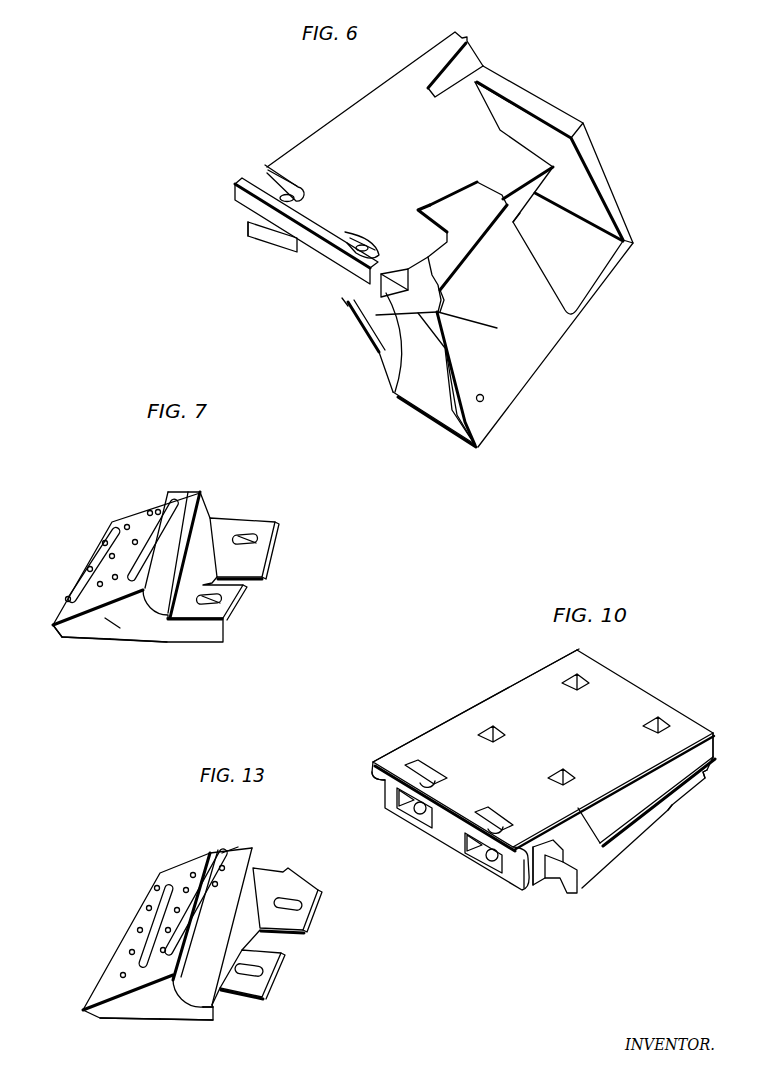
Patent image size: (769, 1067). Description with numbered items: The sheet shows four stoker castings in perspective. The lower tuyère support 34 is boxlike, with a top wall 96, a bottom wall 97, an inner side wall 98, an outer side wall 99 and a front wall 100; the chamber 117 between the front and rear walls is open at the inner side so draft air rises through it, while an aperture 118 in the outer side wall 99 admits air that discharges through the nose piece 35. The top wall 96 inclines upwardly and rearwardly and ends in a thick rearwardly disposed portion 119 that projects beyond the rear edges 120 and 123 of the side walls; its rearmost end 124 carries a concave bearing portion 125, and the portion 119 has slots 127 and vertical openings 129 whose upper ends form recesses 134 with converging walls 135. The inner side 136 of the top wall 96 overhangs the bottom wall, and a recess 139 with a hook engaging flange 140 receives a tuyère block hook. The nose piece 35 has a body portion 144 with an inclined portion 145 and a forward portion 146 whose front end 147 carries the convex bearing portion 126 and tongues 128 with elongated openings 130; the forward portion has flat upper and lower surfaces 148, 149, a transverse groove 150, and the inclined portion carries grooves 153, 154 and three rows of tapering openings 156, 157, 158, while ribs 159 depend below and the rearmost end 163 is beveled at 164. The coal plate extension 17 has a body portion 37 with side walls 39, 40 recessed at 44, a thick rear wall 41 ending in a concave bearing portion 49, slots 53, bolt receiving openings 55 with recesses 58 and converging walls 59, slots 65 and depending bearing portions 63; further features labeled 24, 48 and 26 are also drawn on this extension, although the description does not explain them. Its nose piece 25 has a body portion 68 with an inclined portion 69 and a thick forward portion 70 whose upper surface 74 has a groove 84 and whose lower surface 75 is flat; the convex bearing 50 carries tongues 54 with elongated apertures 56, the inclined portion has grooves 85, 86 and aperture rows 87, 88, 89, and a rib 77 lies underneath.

In FIG. 6, the top wall 96 is at (343, 130).
In FIG. 6, the lower tuyère support 34 is at (424, 87).
In FIG. 6, the front wall 100 is at (536, 112).
In FIG. 6, the bottom wall 97 is at (600, 274).
In FIG. 6, the chamber 117 is at (634, 246).
In FIG. 6, the inner side 136 is at (529, 190).
In FIG. 6, the recess 139 is at (487, 218).
In FIG. 6, the hook engaging flange 140 is at (440, 230).
In FIG. 6, the slots 127 is at (250, 220).
In FIG. 6, the recesses 134 is at (270, 183).
In FIG. 6, the walls 135 is at (272, 167).
In FIG. 6, the vertical openings 129 is at (293, 197).
In FIG. 6, the rearwardly disposed portion 119 is at (250, 234).
In FIG. 6, the rearmost end 124 is at (274, 250).
In FIG. 6, the concave bearing portion 125 is at (385, 294).
In FIG. 6, the outer side wall 99 is at (352, 320).
In FIG. 6, the rearwardly disposed edge 123 is at (370, 348).
In FIG. 6, the rearwardly disposed edge 120 is at (402, 404).
In FIG. 6, the inner side wall 98 is at (501, 361).
In FIG. 6, the aperture 118 is at (484, 398).
In FIG. 7, the lower surface 149 is at (116, 518).
In FIG. 7, the upper surface 148 is at (182, 499).
In FIG. 7, the nose piece 35 is at (211, 504).
In FIG. 7, the rearmost end 163 is at (50, 626).
In FIG. 7, the body portion 144 is at (160, 643).
In FIG. 7, the convex bearing portion 126 is at (224, 519).
In FIG. 7, the front end 147 is at (262, 521).
In FIG. 7, the tongues 128 is at (278, 547).
In FIG. 7, the elongated openings 130 is at (252, 546).
In FIG. 7, the openings 158 is at (106, 532).
In FIG. 7, the transverse groove 150 is at (186, 500).
In FIG. 7, the transverse groove 154 is at (88, 577).
In FIG. 7, the openings 157 is at (126, 523).
In FIG. 7, the openings 156 is at (158, 509).
In FIG. 7, the transverse groove 153 is at (149, 510).
In FIG. 7, the bevel 164 is at (62, 640).
In FIG. 7, the inclined portion 145 is at (83, 620).
In FIG. 7, the strengthening rib 159 is at (113, 625).
In FIG. 7, the forward portion 146 is at (158, 642).
In FIG. 10, the top plate 24 is at (543, 750).
In FIG. 10, the coal plate extension 17 is at (577, 652).
In FIG. 10, the side wall 39 is at (517, 687).
In FIG. 10, the body portion 37 is at (714, 737).
In FIG. 10, the dimple 48 is at (588, 684).
In FIG. 10, the rear wall 41 is at (447, 835).
In FIG. 10, the concave bearing portion 49 is at (380, 788).
In FIG. 10, the slots 53 is at (405, 805).
In FIG. 10, the bolt receiving openings 55 is at (421, 815).
In FIG. 10, the walls 59 is at (440, 778).
In FIG. 10, the recesses 58 is at (435, 780).
In FIG. 10, the side wall 40 is at (586, 850).
In FIG. 10, the recess 44 is at (642, 795).
In FIG. 10, the bearing portions 63 is at (704, 790).
In FIG. 10, the tab 26 is at (540, 882).
In FIG. 10, the slots 65 is at (550, 888).
In FIG. 13, the apertures 88 is at (186, 868).
In FIG. 13, the nose piece 25 is at (253, 845).
In FIG. 13, the inclined portion 69 is at (100, 1011).
In FIG. 13, the body portion 68 is at (180, 1020).
In FIG. 13, the convex bearing 50 is at (264, 866).
In FIG. 13, the tongues 54 is at (313, 910).
In FIG. 13, the elongated apertures 56 is at (300, 898).
In FIG. 13, the transverse groove 86 is at (122, 965).
In FIG. 13, the upper surface 74 is at (227, 842).
In FIG. 13, the apertures 89 is at (148, 905).
In FIG. 13, the transverse groove 85 is at (203, 858).
In FIG. 13, the apertures 87 is at (226, 848).
In FIG. 13, the transverse groove 84 is at (234, 836).
In FIG. 13, the rib 77 is at (143, 1003).
In FIG. 13, the forward portion 70 is at (177, 1021).
In FIG. 13, the lower surface 75 is at (187, 1021).